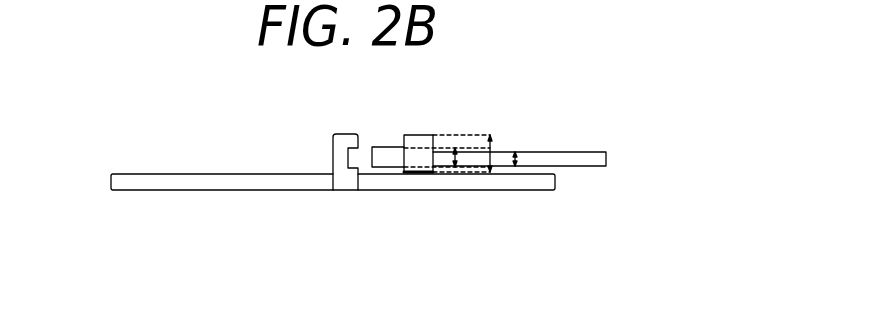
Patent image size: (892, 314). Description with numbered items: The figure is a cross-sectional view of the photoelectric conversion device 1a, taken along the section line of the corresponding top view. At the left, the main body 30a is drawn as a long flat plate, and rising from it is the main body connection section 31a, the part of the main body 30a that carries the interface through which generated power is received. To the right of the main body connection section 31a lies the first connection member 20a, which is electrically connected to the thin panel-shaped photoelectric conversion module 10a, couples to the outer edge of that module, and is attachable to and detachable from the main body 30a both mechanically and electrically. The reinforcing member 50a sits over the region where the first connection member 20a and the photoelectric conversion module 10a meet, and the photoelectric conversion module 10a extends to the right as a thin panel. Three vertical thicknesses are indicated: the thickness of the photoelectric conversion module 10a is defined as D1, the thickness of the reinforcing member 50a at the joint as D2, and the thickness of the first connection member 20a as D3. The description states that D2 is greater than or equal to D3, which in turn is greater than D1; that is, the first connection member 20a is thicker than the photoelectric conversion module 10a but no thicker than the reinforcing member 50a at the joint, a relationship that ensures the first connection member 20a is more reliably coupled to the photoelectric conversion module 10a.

The photoelectric conversion device 1a is at (190, 123).
The photoelectric conversion module 10a is at (567, 152).
The first connection member 20a is at (378, 147).
The main body 30a is at (180, 191).
The main body connection section 31a is at (348, 158).
The reinforcing member 50a is at (420, 140).
The thickness of photoelectric conversion module D1 is at (515, 160).
The thickness of reinforcing member at joint D2 is at (490, 152).
The thickness of first connection member D3 is at (457, 160).